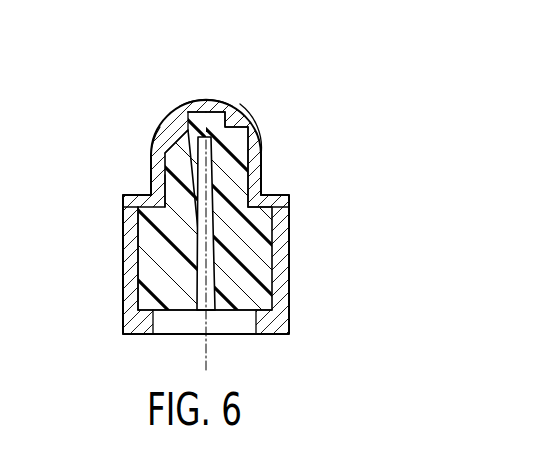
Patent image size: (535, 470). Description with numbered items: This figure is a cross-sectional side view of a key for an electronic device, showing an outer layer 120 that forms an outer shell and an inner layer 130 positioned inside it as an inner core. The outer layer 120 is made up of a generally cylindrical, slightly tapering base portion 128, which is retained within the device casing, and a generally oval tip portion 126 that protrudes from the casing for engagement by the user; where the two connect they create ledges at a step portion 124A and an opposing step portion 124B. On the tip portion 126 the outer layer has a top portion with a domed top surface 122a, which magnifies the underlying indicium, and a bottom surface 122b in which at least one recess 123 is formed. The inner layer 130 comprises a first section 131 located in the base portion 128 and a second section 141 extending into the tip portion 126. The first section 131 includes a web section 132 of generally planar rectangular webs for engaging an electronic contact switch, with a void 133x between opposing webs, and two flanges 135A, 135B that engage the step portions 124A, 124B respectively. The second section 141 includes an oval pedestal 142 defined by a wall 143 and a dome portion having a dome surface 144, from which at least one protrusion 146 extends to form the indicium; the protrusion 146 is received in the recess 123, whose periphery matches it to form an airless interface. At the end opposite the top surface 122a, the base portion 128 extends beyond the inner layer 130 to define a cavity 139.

The outer layer 120 is at (123, 317).
The top surface 122a is at (257, 120).
The bottom surface 122b is at (242, 113).
The recess 123 is at (212, 110).
The step portion 124A is at (150, 194).
The opposing step portion 124B is at (270, 196).
The tip portion 126 is at (265, 163).
The base portion 128 is at (127, 242).
The inner layer 130 is at (260, 297).
The first section 131 is at (263, 290).
The web section 132 is at (140, 272).
The void 133x is at (207, 311).
The flange 135A is at (128, 212).
The flange 135B is at (278, 212).
The cavity 139 is at (153, 311).
The second section 141 is at (152, 182).
The pedestal 142 is at (153, 168).
The wall 143 is at (152, 152).
The dome surface 144 is at (170, 145).
The protrusion 146 is at (192, 114).